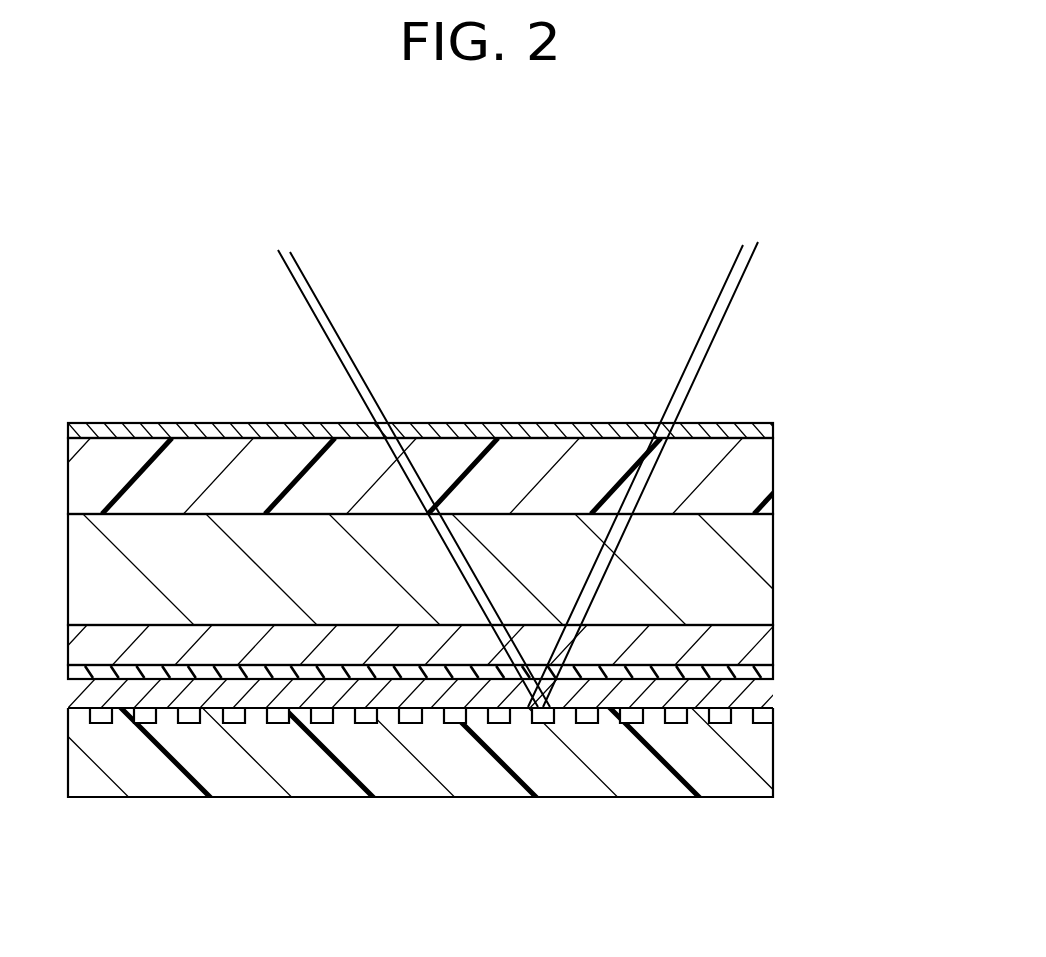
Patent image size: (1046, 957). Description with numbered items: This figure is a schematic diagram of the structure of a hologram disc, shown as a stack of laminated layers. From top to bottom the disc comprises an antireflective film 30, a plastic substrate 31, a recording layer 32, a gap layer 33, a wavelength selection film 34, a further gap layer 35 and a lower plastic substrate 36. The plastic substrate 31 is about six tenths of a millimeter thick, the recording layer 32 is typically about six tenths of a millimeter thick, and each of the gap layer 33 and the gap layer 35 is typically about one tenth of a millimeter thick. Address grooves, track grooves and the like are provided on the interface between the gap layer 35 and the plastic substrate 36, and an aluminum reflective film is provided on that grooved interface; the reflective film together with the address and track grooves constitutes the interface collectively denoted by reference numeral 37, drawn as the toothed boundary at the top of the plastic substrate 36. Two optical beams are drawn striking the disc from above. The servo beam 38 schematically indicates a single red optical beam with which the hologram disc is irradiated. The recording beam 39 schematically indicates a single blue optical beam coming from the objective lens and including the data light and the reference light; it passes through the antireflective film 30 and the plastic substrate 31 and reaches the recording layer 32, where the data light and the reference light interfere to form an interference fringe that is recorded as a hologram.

The antireflective film 30 is at (773, 432).
The plastic substrate 31 is at (760, 473).
The recording layer 32 is at (760, 548).
The gap layer 33 is at (770, 642).
The wavelength selection film 34 is at (773, 672).
The gap layer 35 is at (762, 702).
The plastic substrate 36 is at (762, 752).
The interface with aluminum reflective film, address grooves and track grooves 37 is at (568, 718).
The servo beam 38 is at (296, 281).
The recording beam 39 is at (337, 328).